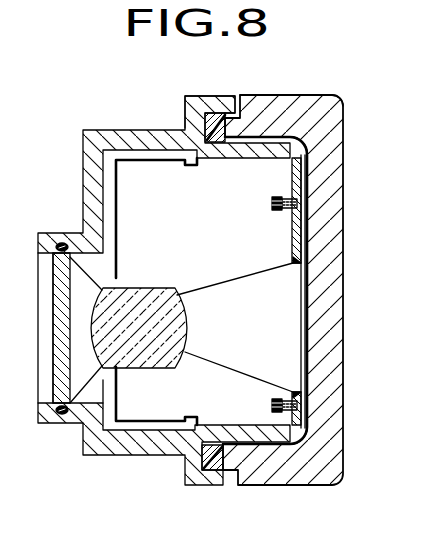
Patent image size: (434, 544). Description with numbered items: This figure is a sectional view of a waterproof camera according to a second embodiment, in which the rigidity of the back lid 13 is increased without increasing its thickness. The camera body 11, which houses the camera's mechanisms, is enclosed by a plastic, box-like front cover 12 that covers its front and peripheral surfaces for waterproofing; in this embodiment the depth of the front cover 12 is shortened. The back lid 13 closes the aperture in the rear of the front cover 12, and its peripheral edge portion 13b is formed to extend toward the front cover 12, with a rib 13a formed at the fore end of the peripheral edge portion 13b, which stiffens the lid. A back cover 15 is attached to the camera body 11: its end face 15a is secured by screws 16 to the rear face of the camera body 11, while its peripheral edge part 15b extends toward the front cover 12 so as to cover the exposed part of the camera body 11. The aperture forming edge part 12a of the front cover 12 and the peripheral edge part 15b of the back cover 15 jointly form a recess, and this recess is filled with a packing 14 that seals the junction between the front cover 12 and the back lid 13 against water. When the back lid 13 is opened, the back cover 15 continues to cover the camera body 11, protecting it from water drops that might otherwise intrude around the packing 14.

The camera body 11 is at (163, 177).
The front cover 12 is at (118, 137).
The aperture forming edge part of front cover 12a is at (226, 104).
The back lid 13 is at (352, 171).
The rib 13a is at (270, 133).
The peripheral edge portion of back lid 13b is at (308, 102).
The packing 14 is at (216, 100).
The back cover 15 is at (303, 248).
The end face of back cover 15a is at (293, 236).
The peripheral edge part of back cover 15b is at (345, 108).
The screws 16 is at (297, 203).